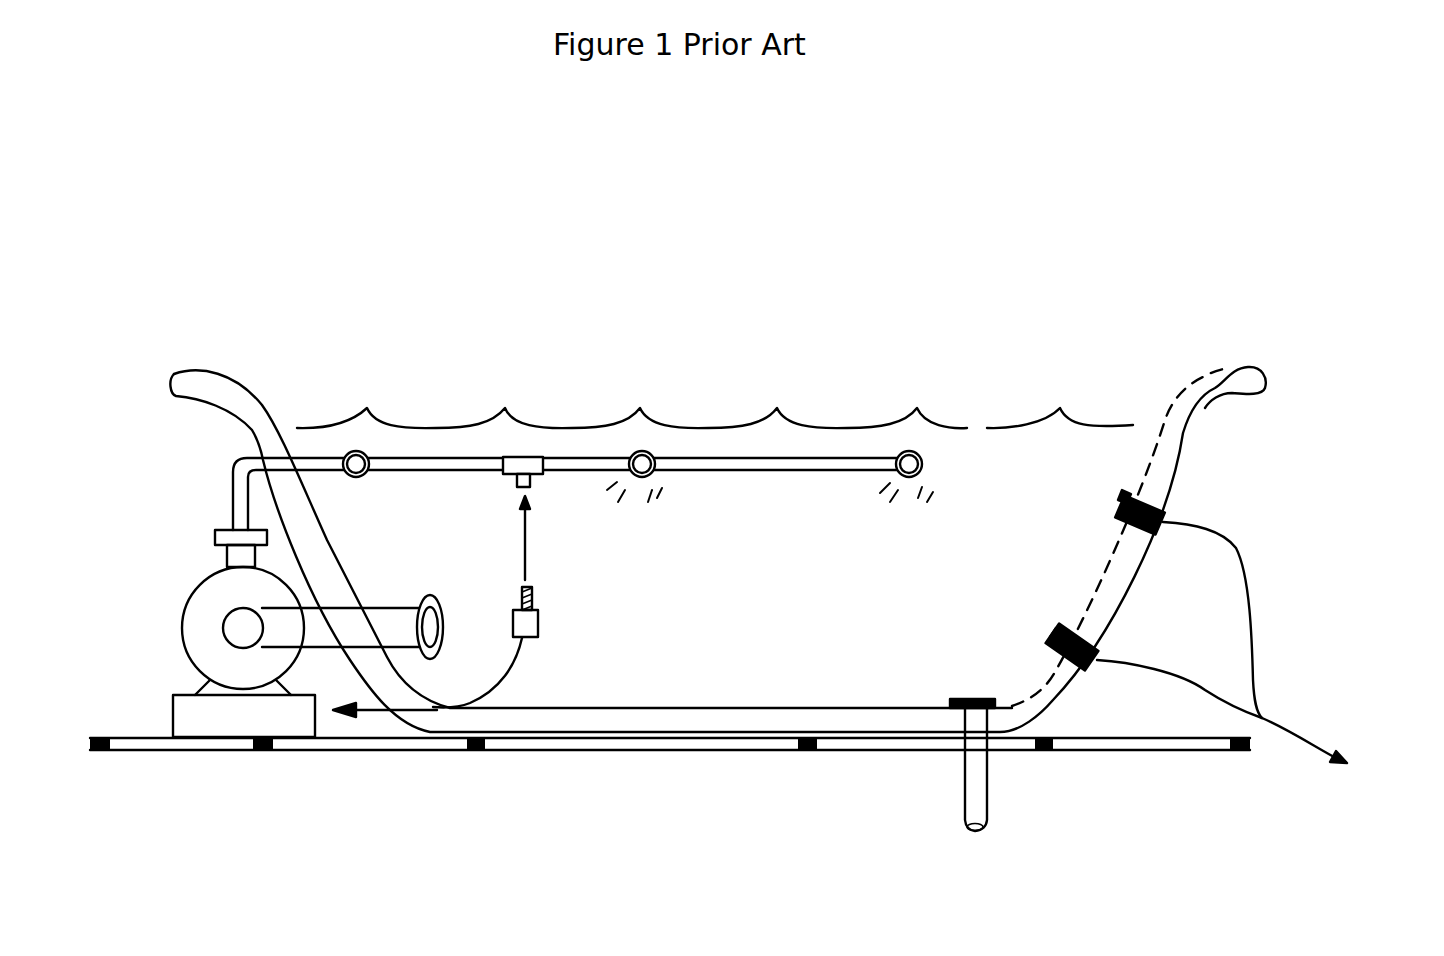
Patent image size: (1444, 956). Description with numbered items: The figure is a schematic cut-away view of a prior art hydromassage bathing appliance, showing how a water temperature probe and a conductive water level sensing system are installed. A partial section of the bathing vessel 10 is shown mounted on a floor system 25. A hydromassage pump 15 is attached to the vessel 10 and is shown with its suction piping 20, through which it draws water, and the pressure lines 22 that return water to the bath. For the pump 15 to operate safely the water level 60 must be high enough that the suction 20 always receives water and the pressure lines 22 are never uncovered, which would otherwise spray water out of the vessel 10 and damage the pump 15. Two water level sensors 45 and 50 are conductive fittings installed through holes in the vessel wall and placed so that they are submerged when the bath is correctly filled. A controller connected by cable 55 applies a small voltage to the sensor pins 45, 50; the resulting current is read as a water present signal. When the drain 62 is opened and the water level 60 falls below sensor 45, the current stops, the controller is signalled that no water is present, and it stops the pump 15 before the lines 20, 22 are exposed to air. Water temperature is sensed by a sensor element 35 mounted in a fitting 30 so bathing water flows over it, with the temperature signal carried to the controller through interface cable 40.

The bathing vessel 10 is at (253, 383).
The hydromassage pump 15 is at (193, 583).
The suction piping 20 is at (313, 607).
The pressure lines 22 is at (810, 510).
The floor system 25 is at (878, 750).
The fitting 30 is at (533, 473).
The sensor element 35 is at (538, 607).
The interface cable 40 is at (350, 718).
The water level sensor 45 is at (1160, 532).
The water level sensor 50 is at (1093, 668).
The cable 55 is at (1357, 763).
The water level 60 is at (970, 423).
The drain 62 is at (973, 697).